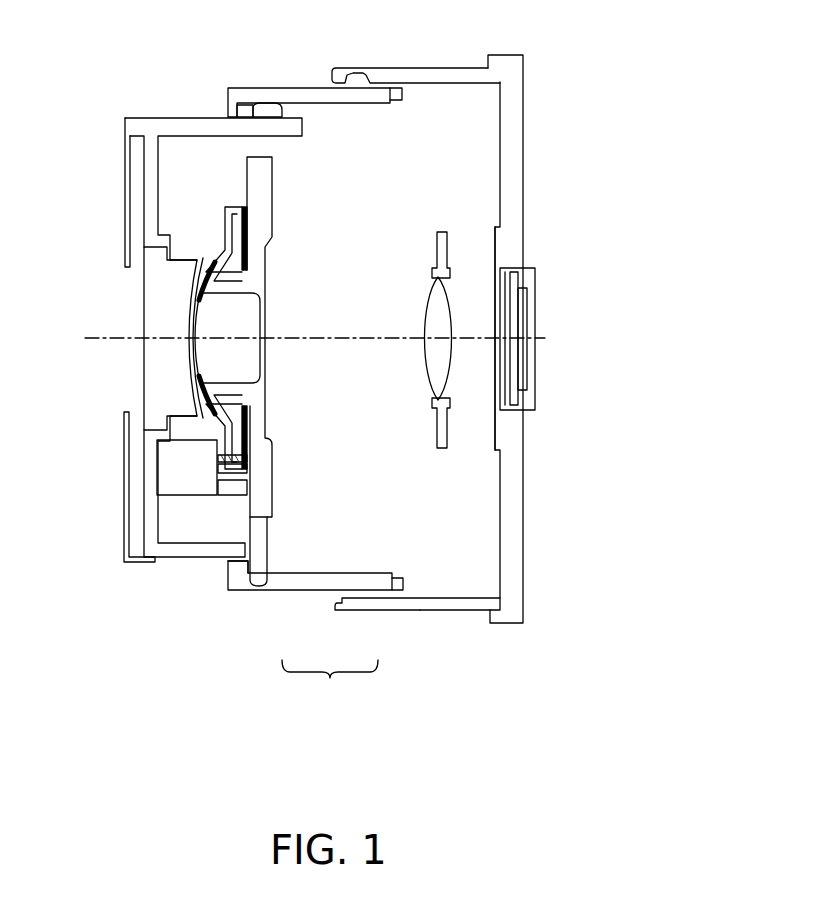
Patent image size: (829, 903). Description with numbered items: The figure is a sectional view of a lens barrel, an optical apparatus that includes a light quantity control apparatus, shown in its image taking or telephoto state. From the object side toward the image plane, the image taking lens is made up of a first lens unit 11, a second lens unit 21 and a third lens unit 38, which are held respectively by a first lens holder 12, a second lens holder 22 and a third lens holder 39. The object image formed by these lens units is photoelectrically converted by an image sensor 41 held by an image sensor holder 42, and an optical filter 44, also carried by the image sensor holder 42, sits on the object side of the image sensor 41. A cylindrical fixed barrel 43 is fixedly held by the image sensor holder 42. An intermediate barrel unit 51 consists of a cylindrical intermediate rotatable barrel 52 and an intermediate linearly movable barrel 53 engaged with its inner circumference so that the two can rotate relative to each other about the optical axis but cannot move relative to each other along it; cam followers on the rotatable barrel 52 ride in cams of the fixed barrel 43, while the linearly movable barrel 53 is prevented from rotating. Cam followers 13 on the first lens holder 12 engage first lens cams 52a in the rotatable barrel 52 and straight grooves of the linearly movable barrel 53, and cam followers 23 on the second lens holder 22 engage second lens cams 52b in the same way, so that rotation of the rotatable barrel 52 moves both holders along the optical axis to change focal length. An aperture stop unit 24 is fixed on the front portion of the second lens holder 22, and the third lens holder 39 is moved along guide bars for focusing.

The first lens unit 11 is at (148, 318).
The first lens holder 12 is at (190, 124).
The cam followers 13 is at (262, 110).
The second lens unit 21 is at (250, 325).
The second lens holder 22 is at (261, 215).
The cam followers 23 is at (250, 565).
The aperture stop unit 24 is at (233, 215).
The third lens unit 38 is at (422, 357).
The third lens holder 39 is at (438, 433).
The image sensor 41 is at (520, 385).
The image sensor holder 42 is at (513, 543).
The fixed barrel 43 is at (480, 605).
The optical filter 44 is at (497, 298).
The intermediate barrel unit 51 is at (330, 687).
The intermediate rotatable barrel 52 is at (322, 578).
The first lens cams 52a is at (270, 92).
The second lens cams 52b is at (267, 577).
The intermediate linearly movable barrel 53 is at (395, 592).